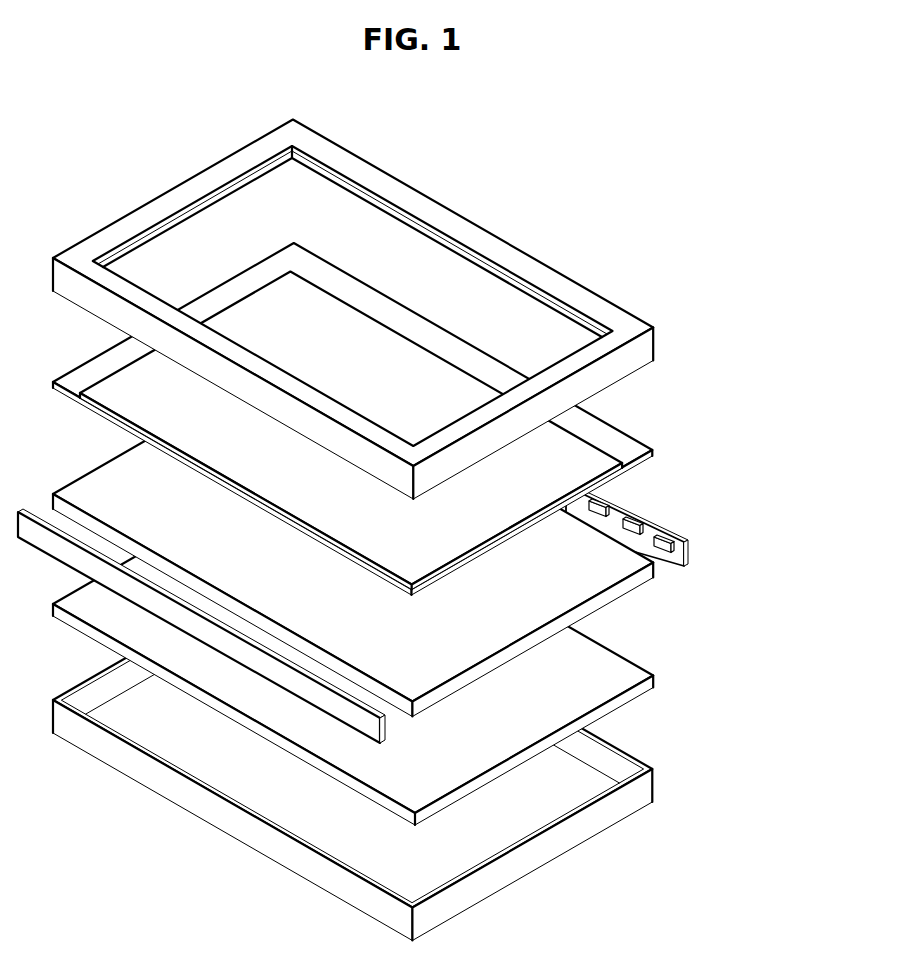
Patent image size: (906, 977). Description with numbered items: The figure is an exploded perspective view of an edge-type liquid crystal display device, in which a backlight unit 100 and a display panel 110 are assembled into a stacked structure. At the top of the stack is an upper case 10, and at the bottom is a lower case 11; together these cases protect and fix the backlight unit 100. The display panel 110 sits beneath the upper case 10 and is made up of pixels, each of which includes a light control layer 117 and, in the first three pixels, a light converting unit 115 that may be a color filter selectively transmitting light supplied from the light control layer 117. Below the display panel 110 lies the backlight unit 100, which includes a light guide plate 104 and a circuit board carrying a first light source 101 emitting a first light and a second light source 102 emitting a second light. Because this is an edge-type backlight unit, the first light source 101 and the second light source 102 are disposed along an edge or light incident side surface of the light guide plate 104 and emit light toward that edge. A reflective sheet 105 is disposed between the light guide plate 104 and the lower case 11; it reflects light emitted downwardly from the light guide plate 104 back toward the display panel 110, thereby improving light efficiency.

The upper case 10 is at (545, 273).
The lower case 11 is at (643, 788).
The backlight unit 100 is at (413, 590).
The first light source 101 is at (627, 513).
The second light source 102 is at (660, 547).
The light guide plate 104 is at (585, 578).
The reflective sheet 105 is at (613, 665).
The display panel 110 is at (406, 419).
The light converting unit 115 is at (590, 465).
The light control layer 117 is at (610, 435).